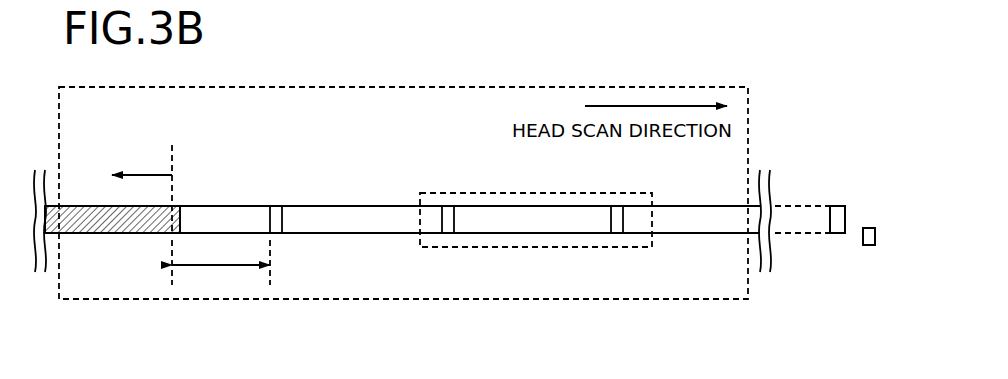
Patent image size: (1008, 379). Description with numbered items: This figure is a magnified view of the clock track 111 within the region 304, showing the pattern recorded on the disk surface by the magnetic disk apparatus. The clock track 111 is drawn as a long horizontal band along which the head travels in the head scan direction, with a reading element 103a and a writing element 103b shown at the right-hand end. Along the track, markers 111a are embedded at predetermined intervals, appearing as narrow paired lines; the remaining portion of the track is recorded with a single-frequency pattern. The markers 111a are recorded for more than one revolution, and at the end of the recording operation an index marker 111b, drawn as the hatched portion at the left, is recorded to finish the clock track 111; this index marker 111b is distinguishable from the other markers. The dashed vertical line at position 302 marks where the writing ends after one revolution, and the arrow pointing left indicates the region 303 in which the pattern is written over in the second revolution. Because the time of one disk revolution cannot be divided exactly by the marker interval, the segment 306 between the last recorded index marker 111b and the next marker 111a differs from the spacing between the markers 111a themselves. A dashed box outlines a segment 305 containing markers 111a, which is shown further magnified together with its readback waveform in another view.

The reading element 103a is at (868, 228).
The writing element 103b is at (837, 206).
The clock track 111 is at (362, 206).
The markers 111a is at (278, 233).
The index marker 111b is at (178, 233).
The position 302 is at (175, 160).
The region 303 is at (122, 159).
The region 304 is at (402, 86).
The segment 305 is at (497, 193).
The segment 306 is at (221, 269).